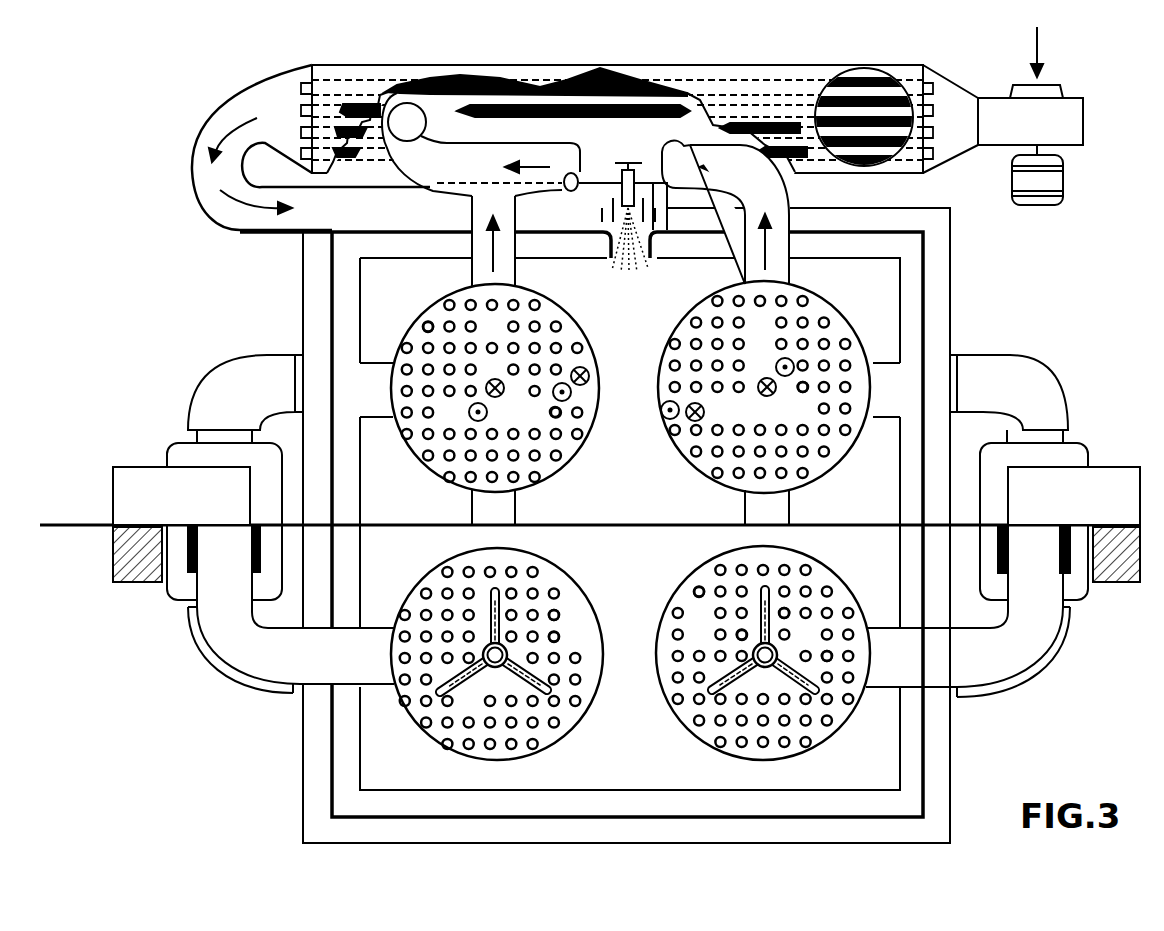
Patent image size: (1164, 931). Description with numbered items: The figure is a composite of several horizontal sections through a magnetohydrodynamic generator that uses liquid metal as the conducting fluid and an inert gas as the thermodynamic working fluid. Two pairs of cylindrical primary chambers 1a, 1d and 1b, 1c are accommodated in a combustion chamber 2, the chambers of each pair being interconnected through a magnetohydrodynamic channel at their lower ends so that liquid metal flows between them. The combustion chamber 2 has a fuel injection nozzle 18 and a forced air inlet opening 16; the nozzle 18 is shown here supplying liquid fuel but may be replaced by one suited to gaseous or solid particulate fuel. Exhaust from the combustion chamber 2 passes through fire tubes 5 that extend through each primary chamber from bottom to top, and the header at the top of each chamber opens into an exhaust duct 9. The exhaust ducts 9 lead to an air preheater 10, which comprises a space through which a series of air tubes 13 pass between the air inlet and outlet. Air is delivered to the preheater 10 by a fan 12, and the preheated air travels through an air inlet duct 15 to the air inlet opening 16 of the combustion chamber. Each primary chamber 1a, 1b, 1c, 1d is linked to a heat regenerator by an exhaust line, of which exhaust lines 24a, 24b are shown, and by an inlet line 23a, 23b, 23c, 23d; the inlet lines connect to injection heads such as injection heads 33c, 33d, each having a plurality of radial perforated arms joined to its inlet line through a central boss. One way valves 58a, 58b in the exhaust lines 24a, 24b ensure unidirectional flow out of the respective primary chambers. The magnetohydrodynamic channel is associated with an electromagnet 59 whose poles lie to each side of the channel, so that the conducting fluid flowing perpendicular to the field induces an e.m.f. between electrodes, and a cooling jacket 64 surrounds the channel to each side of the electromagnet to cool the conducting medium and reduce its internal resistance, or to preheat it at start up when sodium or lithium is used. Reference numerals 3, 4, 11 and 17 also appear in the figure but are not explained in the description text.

The primary chamber 1a is at (566, 307).
The primary chamber 1b is at (836, 304).
The primary chamber 1c is at (841, 571).
The primary chamber 1d is at (554, 566).
The combustion chamber 2 is at (629, 581).
The inner liner 3 is at (337, 741).
The outer wall 4 is at (305, 786).
The fire tubes 5 is at (423, 324).
The exhaust duct 9 is at (501, 250).
The air preheater 10 is at (354, 79).
The fan 11 is at (850, 77).
The fan 12 is at (1027, 137).
The air tubes 13 is at (874, 74).
The air inlet duct 15 is at (320, 219).
The air inlet opening 16 is at (655, 262).
The opening wall 17 is at (606, 265).
The fuel injection nozzle 18 is at (592, 173).
The inlet line 23a is at (495, 379).
The inlet line 23b is at (762, 395).
The inlet line 23c is at (765, 668).
The inlet line 23d is at (483, 654).
The exhaust line 24a is at (487, 413).
The exhaust line 24b is at (776, 367).
The injection head 33c is at (792, 671).
The injection head 33d is at (527, 686).
The one way valve 58a is at (207, 570).
The one way valve 58b is at (1022, 570).
The electromagnet 59 is at (165, 506).
The cooling jacket 64 is at (217, 414).